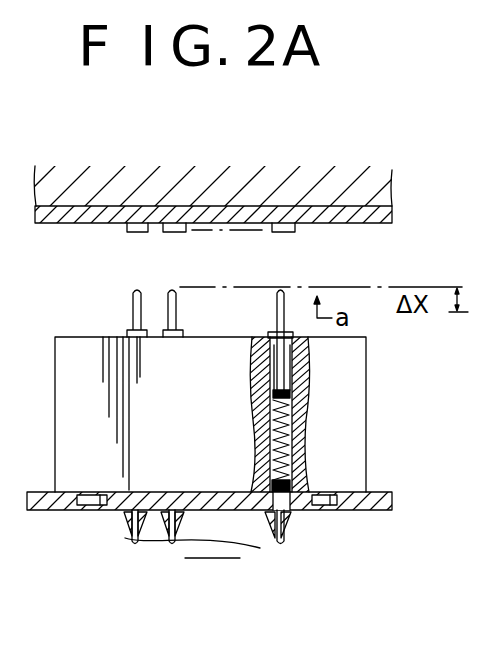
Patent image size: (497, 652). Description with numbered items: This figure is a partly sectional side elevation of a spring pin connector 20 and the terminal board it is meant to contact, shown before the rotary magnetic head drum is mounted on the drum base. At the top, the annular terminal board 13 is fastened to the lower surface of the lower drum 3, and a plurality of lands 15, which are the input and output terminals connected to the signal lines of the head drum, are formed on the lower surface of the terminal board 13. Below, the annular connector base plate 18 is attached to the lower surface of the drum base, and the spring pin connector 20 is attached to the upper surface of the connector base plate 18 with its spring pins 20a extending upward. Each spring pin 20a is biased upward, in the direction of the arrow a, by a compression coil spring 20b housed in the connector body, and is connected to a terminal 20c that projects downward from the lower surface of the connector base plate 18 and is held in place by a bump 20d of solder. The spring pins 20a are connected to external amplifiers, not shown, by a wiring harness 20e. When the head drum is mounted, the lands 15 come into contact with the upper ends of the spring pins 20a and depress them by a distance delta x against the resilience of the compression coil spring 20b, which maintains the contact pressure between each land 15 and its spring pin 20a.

The lower drum 3 is at (90, 186).
The terminal board 13 is at (338, 212).
The lands 15 is at (278, 210).
The connector base plate 18 is at (66, 512).
The spring pin connector 20 is at (198, 477).
The spring pin 20a is at (277, 303).
The compression coil spring 20b is at (291, 436).
The terminal 20c is at (168, 548).
The bump of solder 20d is at (127, 522).
The wiring harness 20e is at (260, 548).